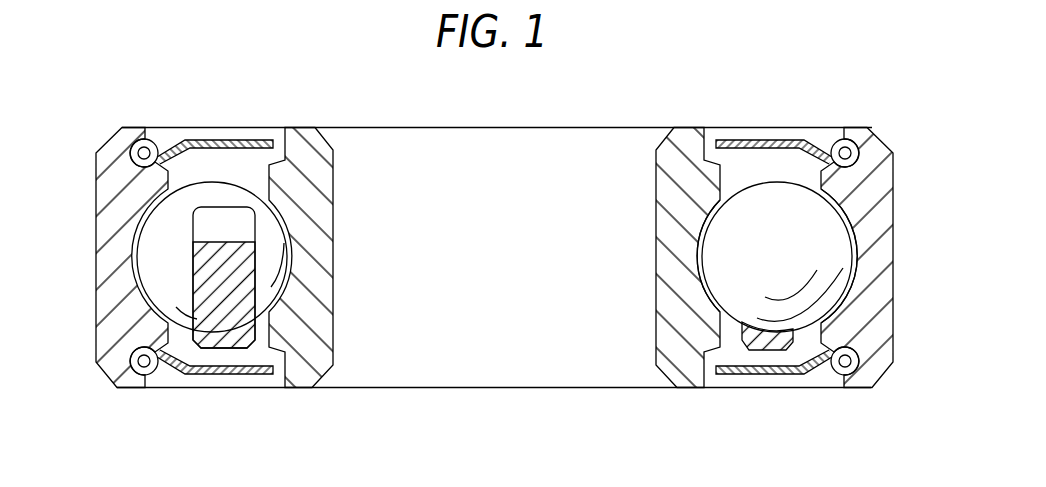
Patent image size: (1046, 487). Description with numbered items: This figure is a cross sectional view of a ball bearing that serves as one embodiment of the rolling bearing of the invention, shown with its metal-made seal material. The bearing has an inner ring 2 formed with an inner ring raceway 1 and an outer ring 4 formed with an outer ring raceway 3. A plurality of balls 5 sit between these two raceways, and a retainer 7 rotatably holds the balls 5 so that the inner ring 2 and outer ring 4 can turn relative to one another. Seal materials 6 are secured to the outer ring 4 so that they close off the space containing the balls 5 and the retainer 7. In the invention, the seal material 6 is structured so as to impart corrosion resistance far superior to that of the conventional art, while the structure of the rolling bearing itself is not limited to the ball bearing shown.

The inner ring raceway 1 is at (703, 244).
The inner ring 2 is at (683, 370).
The outer ring raceway 3 is at (850, 245).
The outer ring 4 is at (880, 156).
The balls 5 is at (148, 247).
The seal material 6 is at (220, 141).
The retainer 7 is at (222, 340).